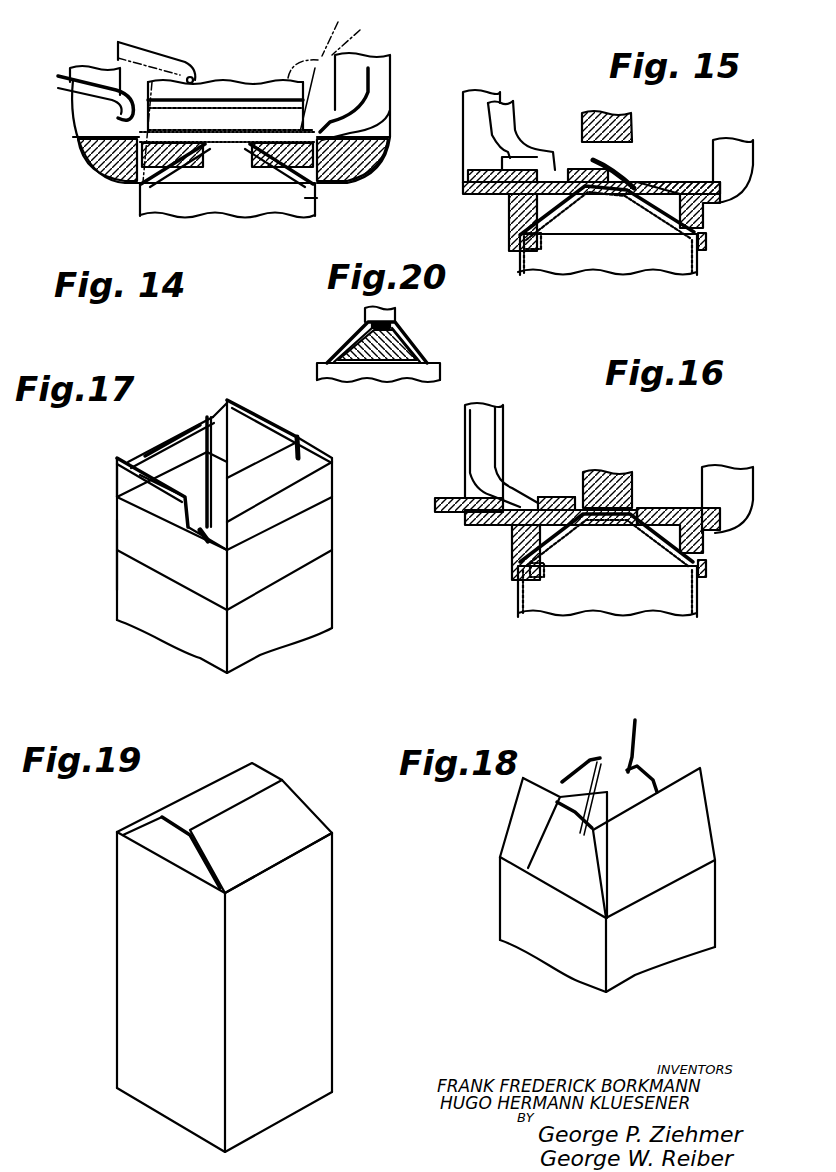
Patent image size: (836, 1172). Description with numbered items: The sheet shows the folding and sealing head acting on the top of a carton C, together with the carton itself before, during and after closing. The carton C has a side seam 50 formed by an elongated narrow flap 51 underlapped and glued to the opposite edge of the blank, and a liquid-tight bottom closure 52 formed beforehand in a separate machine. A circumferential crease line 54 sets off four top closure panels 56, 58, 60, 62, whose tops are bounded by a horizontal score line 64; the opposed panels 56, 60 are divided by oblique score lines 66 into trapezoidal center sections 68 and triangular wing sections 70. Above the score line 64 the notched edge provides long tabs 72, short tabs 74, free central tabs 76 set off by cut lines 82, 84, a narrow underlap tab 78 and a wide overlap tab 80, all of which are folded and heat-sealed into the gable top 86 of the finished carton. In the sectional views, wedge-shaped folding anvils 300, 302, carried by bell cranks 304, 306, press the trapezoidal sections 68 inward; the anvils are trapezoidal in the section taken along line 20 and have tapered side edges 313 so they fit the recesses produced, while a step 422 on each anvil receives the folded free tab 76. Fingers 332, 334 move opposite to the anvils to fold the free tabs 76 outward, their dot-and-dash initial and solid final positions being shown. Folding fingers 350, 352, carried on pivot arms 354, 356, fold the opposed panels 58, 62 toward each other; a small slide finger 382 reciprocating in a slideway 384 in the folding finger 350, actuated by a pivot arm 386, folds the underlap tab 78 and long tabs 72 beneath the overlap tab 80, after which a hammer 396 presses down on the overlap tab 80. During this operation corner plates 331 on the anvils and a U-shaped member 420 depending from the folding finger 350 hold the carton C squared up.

In FIG. 14, the section line 20— 20 is at (139, 28).
In FIG. 14, the bell crank 306 is at (86, 68).
In FIG. 14, the finger 334 is at (90, 90).
In FIG. 14, the finger 332 is at (294, 58).
In FIG. 14, the bell crank 304 is at (383, 58).
In FIG. 14, the hammer 396 is at (237, 116).
In FIG. 15, the hammer 396 is at (635, 120).
In FIG. 20, the hammer 396 is at (397, 314).
In FIG. 16, the hammer 396 is at (620, 474).
In FIG. 14, the step 422 is at (227, 167).
In FIG. 14, the folding anvil 302 is at (140, 198).
In FIG. 20, the folding anvil 302 is at (386, 355).
In FIG. 14, the folding anvil 300 is at (316, 200).
In FIG. 15, the pivot arm 354 is at (470, 131).
In FIG. 16, the pivot arm 354 is at (470, 470).
In FIG. 15, the pivot arm 386 is at (512, 134).
In FIG. 16, the pivot arm 386 is at (487, 433).
In FIG. 15, the slide finger 382 is at (470, 176).
In FIG. 16, the slide finger 382 is at (547, 498).
In FIG. 15, the slideway 384 is at (567, 168).
In FIG. 16, the slideway 384 is at (570, 497).
In FIG. 15, the folding finger 352 is at (674, 184).
In FIG. 16, the folding finger 352 is at (673, 512).
In FIG. 15, the pivot arm 356 is at (744, 162).
In FIG. 16, the pivot arm 356 is at (735, 480).
In FIG. 15, the folding finger 350 is at (514, 206).
In FIG. 16, the folding finger 350 is at (515, 543).
In FIG. 15, the U-shaped member 420 is at (512, 239).
In FIG. 16, the U-shaped member 420 is at (512, 577).
In FIG. 15, the corner plate 331 is at (708, 241).
In FIG. 16, the corner plate 331 is at (708, 573).
In FIG. 20, the tapered side edge 313 is at (350, 342).
In FIG. 17, the side seam 50 is at (214, 404).
In FIG. 18, the side seam 50 is at (616, 740).
In FIG. 17, the elongated narrow flap 51 is at (206, 418).
In FIG. 18, the elongated narrow flap 51 is at (598, 758).
In FIG. 19, the bottom closure 52 is at (168, 1126).
In FIG. 17, the circumferential crease line 54 is at (160, 574).
In FIG. 19, the circumferential crease line 54 is at (280, 862).
In FIG. 18, the circumferential crease line 54 is at (637, 910).
In FIG. 17, the top closure panel 56 is at (134, 551).
In FIG. 17, the top closure panel 58 is at (292, 570).
In FIG. 19, the top closure panel 58 is at (266, 857).
In FIG. 18, the top closure panel 58 is at (669, 873).
In FIG. 17, the top closure panel 60 is at (248, 440).
In FIG. 17, the top closure panel 62 is at (195, 485).
In FIG. 19, the top closure panel 62 is at (180, 802).
In FIG. 17, the horizontal circumferential score line 64 is at (157, 468).
In FIG. 19, the horizontal circumferential score line 64 is at (253, 795).
In FIG. 18, the horizontal circumferential score line 64 is at (683, 824).
In FIG. 17, the oblique score line 66 is at (186, 548).
In FIG. 18, the oblique score line 66 is at (550, 892).
In FIG. 17, the trapezoidal center section 68 is at (192, 583).
In FIG. 19, the trapezoidal center section 68 is at (183, 853).
In FIG. 18, the trapezoidal center section 68 is at (569, 870).
In FIG. 17, the triangular wing section 70 is at (202, 612).
In FIG. 18, the triangular wing section 70 is at (513, 838).
In FIG. 17, the long tab 72 is at (128, 482).
In FIG. 18, the long tab 72 is at (637, 749).
In FIG. 17, the short tab 74 is at (320, 457).
In FIG. 18, the short tab 74 is at (590, 893).
In FIG. 17, the free central tab 76 is at (310, 424).
In FIG. 19, the free central tab 76 is at (173, 828).
In FIG. 18, the free central tab 76 is at (636, 781).
In FIG. 17, the narrow underlap tab 78 is at (170, 450).
In FIG. 19, the narrow underlap tab 78 is at (168, 824).
In FIG. 18, the narrow underlap tab 78 is at (565, 781).
In FIG. 17, the wide overlap tab 80 is at (325, 483).
In FIG. 19, the wide overlap tab 80 is at (231, 810).
In FIG. 18, the wide overlap tab 80 is at (690, 789).
In FIG. 17, the cut line 82 is at (157, 497).
In FIG. 17, the cut line 84 is at (294, 461).
In FIG. 19, the gable top 86 is at (265, 765).
In FIG. 14, the carton C is at (271, 233).
In FIG. 15, the carton C is at (607, 254).
In FIG. 20, the carton C is at (442, 372).
In FIG. 16, the carton C is at (607, 591).
In FIG. 17, the carton C is at (337, 584).
In FIG. 19, the carton C is at (290, 962).
In FIG. 18, the carton C is at (705, 917).